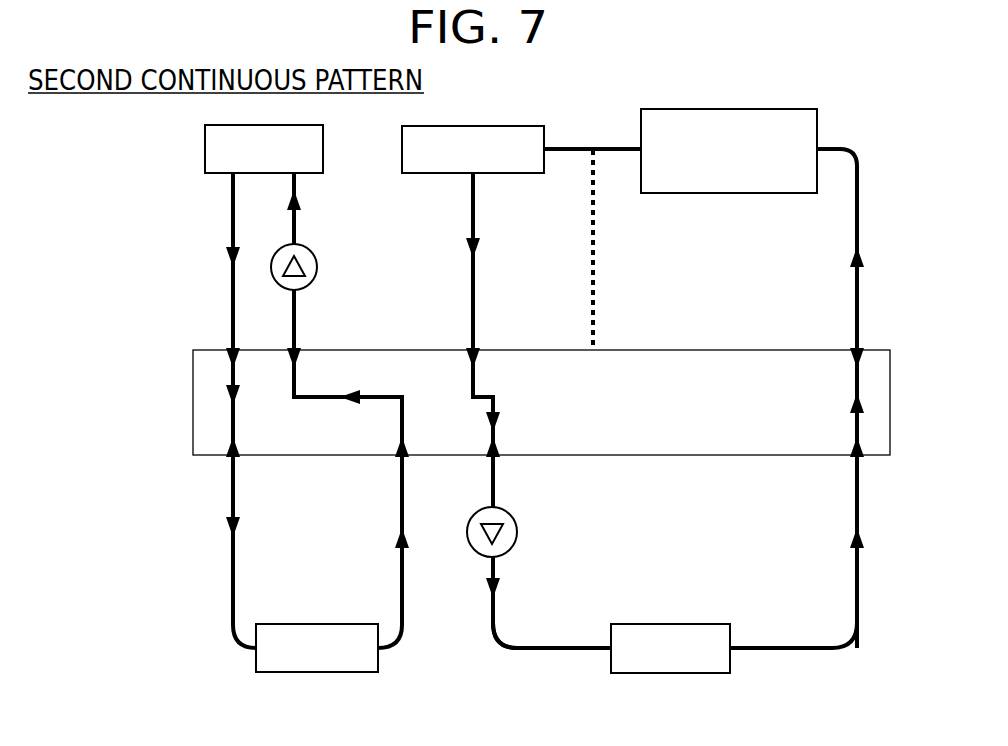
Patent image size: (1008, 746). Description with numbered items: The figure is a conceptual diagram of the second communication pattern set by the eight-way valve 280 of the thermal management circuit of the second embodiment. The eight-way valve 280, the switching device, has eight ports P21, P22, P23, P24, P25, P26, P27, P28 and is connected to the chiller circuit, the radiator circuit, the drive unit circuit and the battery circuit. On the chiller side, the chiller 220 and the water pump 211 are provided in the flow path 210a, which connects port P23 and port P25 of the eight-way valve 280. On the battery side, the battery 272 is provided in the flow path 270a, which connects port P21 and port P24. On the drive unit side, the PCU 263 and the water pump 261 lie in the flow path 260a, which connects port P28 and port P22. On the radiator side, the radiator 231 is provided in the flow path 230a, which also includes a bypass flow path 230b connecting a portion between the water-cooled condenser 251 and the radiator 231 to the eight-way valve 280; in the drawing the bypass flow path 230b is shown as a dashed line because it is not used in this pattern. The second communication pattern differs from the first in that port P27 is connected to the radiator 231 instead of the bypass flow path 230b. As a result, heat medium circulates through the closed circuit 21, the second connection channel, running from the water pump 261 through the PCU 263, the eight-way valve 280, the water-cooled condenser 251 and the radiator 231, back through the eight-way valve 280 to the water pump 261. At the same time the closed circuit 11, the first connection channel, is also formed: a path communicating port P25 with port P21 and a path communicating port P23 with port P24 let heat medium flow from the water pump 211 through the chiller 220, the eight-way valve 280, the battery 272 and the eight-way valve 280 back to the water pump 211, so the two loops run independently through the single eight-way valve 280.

The closed circuit 11 is at (230, 233).
The closed circuit 21 is at (862, 588).
The flow path 210a is at (296, 224).
The water pump 211 is at (311, 257).
The chiller 220 is at (323, 150).
The flow path 230a is at (468, 232).
The bypass flow path 230b is at (595, 290).
The radiator 231 is at (497, 126).
The water-cooled condenser 251 is at (784, 109).
The flow path 260a is at (496, 625).
The water pump 261 is at (507, 506).
The PCU 263 is at (690, 624).
The flow path 270a is at (236, 572).
The battery 272 is at (325, 624).
The eight-way valve 280 is at (636, 350).
The port P21 is at (224, 446).
The port P22 is at (851, 446).
The port P23 is at (301, 360).
The port P24 is at (392, 446).
The port P25 is at (224, 360).
The port P26 is at (849, 360).
The port P27 is at (466, 360).
The port P28 is at (484, 446).